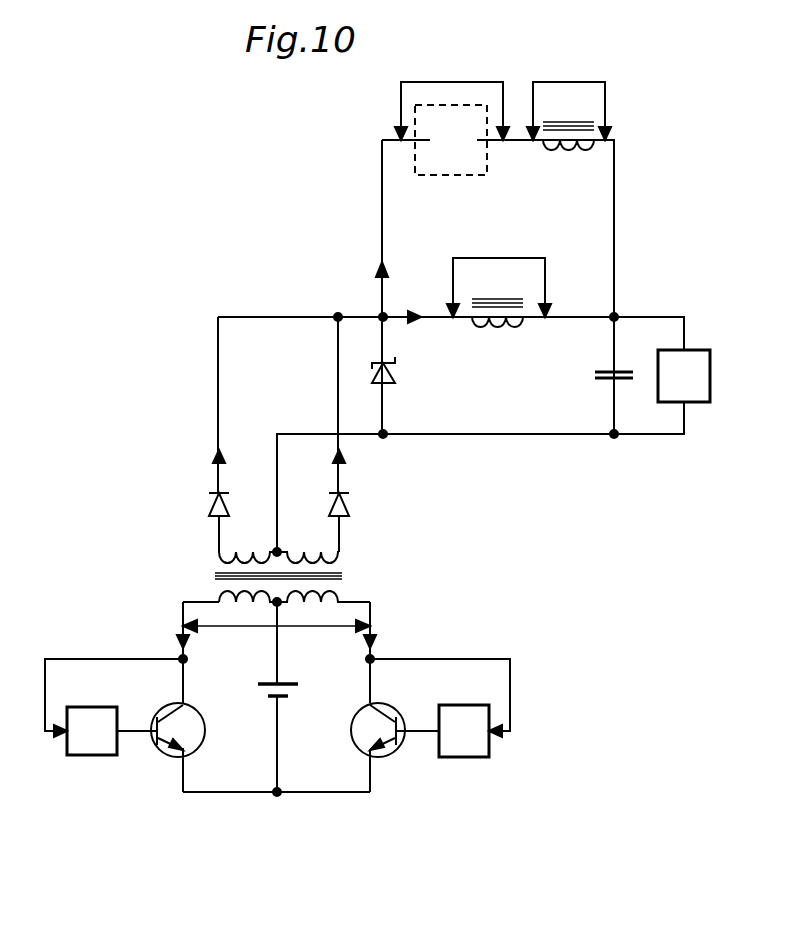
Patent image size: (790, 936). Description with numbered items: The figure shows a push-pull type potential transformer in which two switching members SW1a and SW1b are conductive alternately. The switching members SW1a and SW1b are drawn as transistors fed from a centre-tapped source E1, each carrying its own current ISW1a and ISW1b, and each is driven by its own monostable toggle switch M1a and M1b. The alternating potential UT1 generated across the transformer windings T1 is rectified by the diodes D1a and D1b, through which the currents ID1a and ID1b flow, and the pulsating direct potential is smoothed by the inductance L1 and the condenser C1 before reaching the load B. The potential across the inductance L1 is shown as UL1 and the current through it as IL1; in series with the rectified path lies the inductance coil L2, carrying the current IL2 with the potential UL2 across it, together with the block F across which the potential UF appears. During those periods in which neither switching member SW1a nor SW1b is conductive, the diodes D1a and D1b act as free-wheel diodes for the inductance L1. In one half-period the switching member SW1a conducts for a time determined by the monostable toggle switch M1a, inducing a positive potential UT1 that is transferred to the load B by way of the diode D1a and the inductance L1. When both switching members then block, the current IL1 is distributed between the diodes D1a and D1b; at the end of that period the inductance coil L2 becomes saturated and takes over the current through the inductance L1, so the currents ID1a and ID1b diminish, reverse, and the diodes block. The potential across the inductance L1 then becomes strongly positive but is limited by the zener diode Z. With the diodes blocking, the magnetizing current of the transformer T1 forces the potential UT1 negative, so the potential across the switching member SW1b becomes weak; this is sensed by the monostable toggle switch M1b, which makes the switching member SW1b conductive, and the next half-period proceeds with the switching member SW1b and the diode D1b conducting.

The fuel cell / source block F is at (451, 140).
The voltage across F UF is at (452, 97).
The inductance coil L2 is at (568, 149).
The voltage across L2 UL2 is at (569, 97).
The current through L2 IL2 is at (359, 261).
The inductance L1 is at (497, 325).
The voltage across L1 UL1 is at (499, 275).
The current through the inductance L1 IL1 is at (423, 336).
The condenser C1 is at (605, 359).
The load B is at (684, 376).
The zener diode Z is at (387, 384).
The diode D1a is at (355, 519).
The current through diode D1a ID1a is at (363, 461).
The diode D1b is at (200, 518).
The current through diode D1b ID1b is at (244, 461).
The transformer T1 is at (277, 577).
The potential across the transformer windings UT1 is at (276, 627).
The voltage source E1 is at (281, 691).
The switching member SW1a is at (178, 741).
The current through SW1a ISW1a is at (141, 635).
The switching member SW1b is at (367, 742).
The current through SW1b ISW1b is at (402, 635).
The monostable toggle switch M1a is at (114, 707).
The monostable toggle switch M1b is at (440, 708).